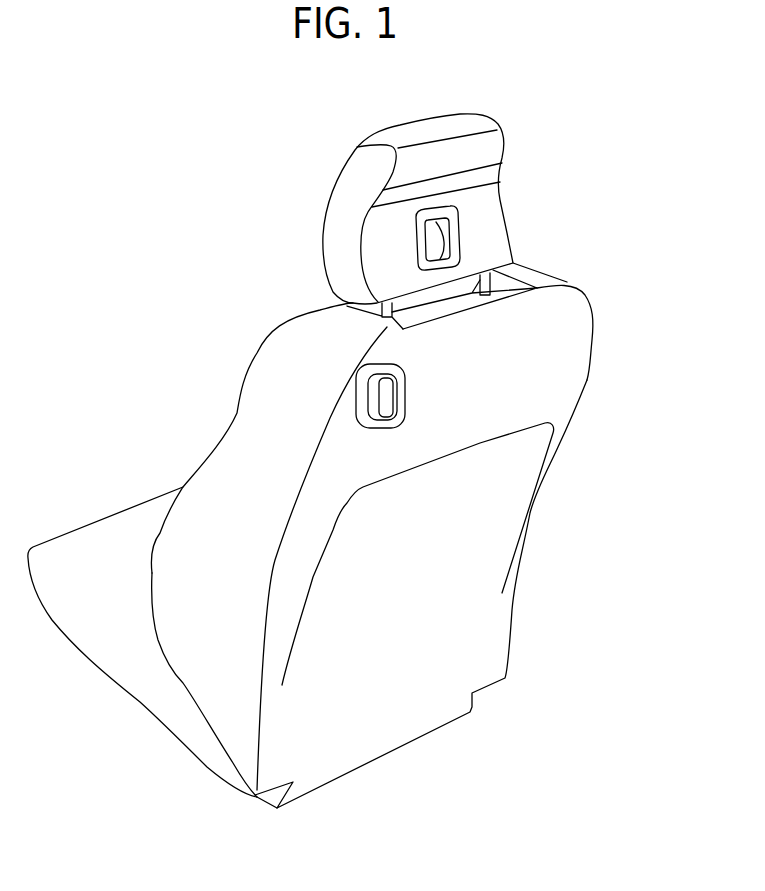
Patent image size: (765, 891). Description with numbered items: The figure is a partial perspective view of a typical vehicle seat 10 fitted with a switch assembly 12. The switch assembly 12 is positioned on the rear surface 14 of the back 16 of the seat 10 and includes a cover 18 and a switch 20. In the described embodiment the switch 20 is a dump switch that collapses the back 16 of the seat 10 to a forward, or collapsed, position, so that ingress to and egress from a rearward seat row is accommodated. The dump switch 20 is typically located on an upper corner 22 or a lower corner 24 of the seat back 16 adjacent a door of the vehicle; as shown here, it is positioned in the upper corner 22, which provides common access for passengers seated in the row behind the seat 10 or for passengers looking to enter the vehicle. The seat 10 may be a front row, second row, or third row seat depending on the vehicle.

The vehicle seat 10 is at (351, 479).
The switch assembly 12 is at (278, 371).
The rear surface 14 is at (487, 412).
The back 16 is at (412, 531).
The cover 18 is at (357, 397).
The switch 20 is at (378, 406).
The upper corner 22 is at (350, 347).
The lower corner 24 is at (233, 788).